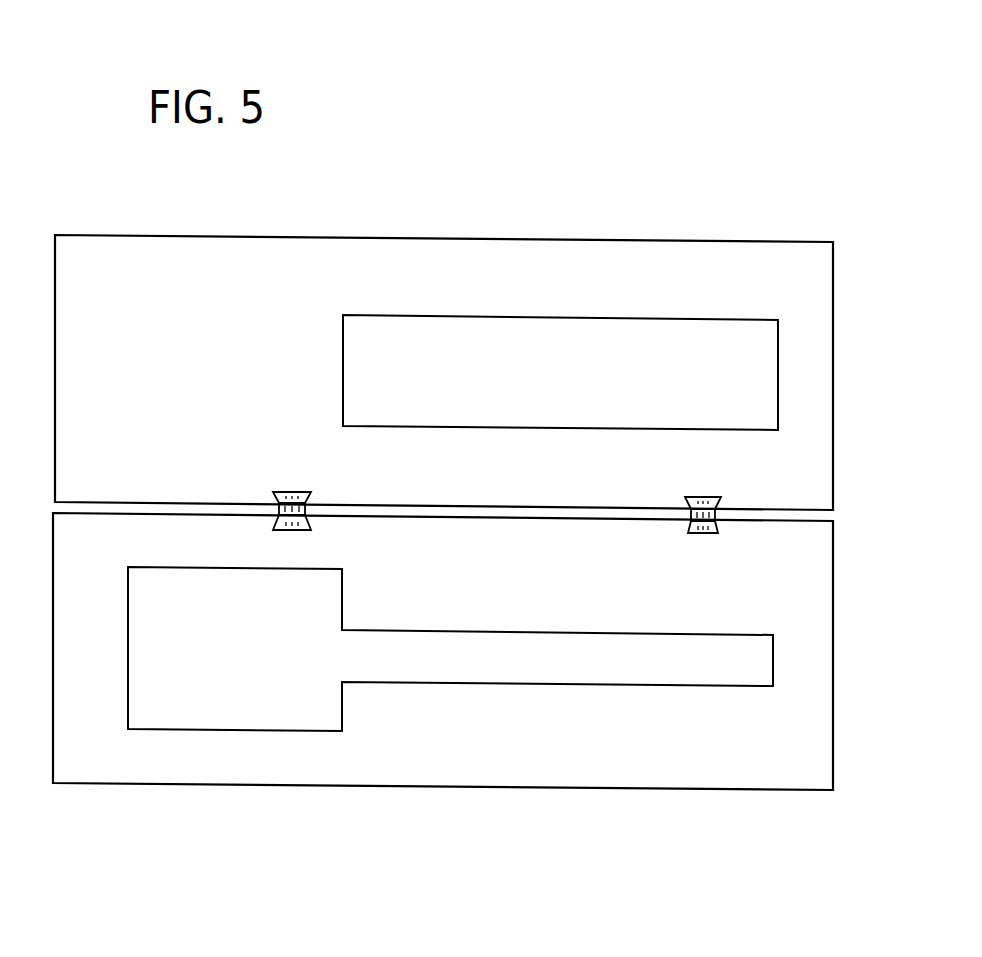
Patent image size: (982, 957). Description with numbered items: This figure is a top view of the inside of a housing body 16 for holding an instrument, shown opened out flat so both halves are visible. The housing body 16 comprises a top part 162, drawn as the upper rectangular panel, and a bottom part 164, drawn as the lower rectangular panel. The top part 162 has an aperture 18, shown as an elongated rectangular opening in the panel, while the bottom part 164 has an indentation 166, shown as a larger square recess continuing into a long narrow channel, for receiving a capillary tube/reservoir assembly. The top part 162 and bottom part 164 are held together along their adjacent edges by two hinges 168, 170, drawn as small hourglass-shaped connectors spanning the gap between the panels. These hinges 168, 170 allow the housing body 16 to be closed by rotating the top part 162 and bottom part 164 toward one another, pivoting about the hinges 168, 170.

The housing body 16 is at (454, 917).
The aperture 18 is at (770, 375).
The top part 162 is at (190, 320).
The bottom part 164 is at (519, 567).
The indentation 166 is at (192, 707).
The hinge 168 is at (714, 497).
The hinge 170 is at (284, 492).